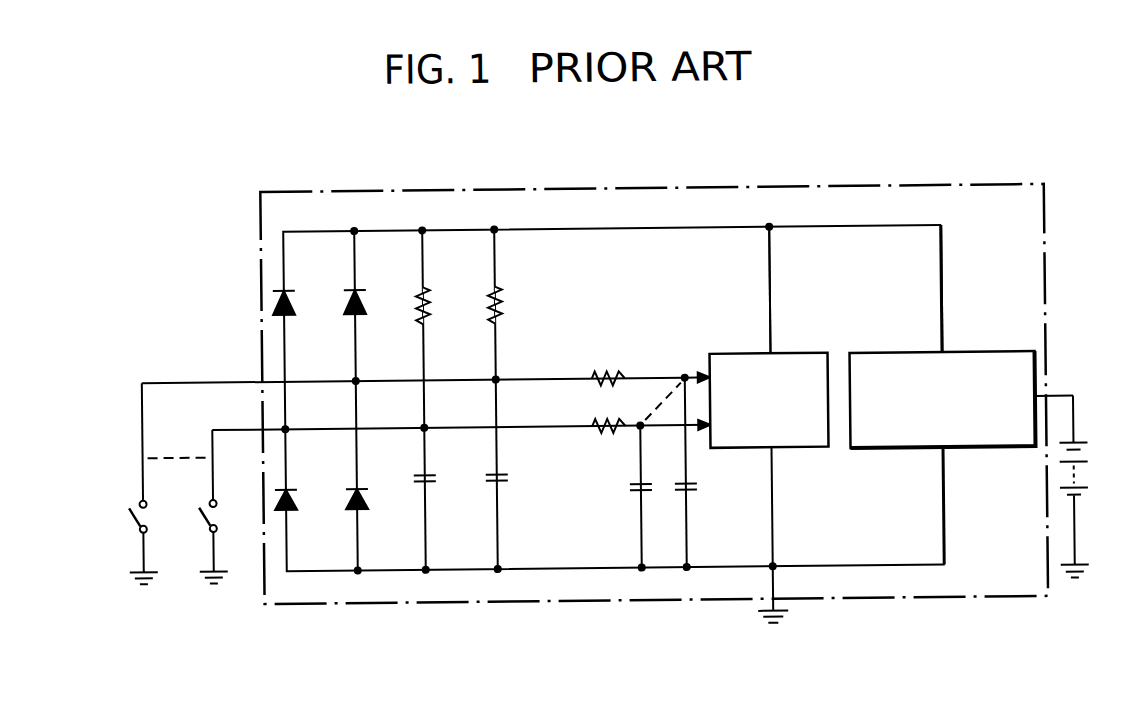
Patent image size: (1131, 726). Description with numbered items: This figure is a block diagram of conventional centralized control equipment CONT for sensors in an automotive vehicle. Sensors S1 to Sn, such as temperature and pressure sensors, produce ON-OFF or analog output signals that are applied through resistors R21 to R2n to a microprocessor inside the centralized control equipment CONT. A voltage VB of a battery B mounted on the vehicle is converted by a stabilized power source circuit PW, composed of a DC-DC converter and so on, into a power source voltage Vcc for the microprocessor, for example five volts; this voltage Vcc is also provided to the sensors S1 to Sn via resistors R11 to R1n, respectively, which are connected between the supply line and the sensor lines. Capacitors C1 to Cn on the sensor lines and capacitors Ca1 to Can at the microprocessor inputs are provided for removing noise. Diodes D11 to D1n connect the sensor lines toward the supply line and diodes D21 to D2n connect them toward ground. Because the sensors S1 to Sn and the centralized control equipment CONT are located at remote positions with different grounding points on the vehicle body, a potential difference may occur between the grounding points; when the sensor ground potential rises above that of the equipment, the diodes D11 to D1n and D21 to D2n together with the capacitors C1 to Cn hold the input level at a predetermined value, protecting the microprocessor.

The centralized control equipment CONT is at (633, 188).
The diode D1n is at (306, 301).
The diode D11 is at (378, 300).
The resistor R1n is at (446, 306).
The resistor R11 is at (518, 305).
The diode D2n is at (307, 487).
The diode D21 is at (378, 487).
The capacitor Cn is at (443, 475).
The capacitor C1 is at (516, 474).
The resistor R21 is at (612, 364).
The resistor R2n is at (613, 412).
The capacitor Can is at (615, 492).
The capacitor Ca1 is at (711, 491).
The sensor S1 is at (156, 484).
The sensor Sn is at (224, 507).
The stabilized power source circuit PW is at (904, 355).
The power source voltage Vcc is at (963, 287).
The battery voltage VB is at (1056, 383).
The battery B is at (1083, 486).